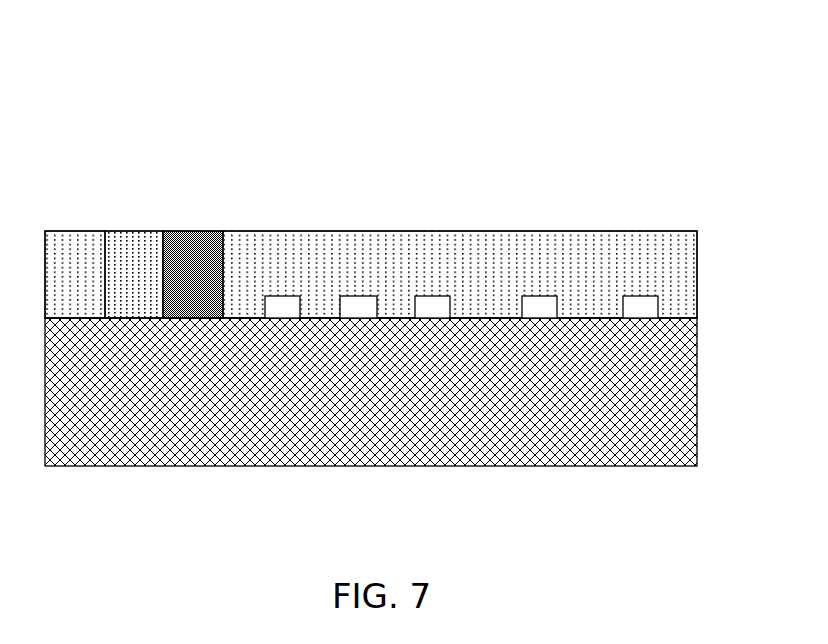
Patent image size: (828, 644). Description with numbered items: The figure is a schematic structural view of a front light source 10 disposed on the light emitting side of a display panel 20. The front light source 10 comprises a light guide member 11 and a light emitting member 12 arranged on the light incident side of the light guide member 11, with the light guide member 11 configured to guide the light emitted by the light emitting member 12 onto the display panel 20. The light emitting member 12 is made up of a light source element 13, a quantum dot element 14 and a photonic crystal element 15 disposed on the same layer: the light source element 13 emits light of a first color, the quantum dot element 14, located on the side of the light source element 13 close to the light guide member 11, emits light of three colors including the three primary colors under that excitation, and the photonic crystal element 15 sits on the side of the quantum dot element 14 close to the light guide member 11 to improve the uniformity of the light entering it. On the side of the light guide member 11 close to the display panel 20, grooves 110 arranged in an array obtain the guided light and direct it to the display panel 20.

The front light source 10 is at (342, 70).
The light guide member 11 is at (265, 258).
The grooves 110 is at (432, 295).
The light emitting member 12 is at (253, 138).
The light source element 13 is at (60, 248).
The quantum dot element 14 is at (140, 248).
The photonic crystal element 15 is at (195, 242).
The display panel 20 is at (403, 387).